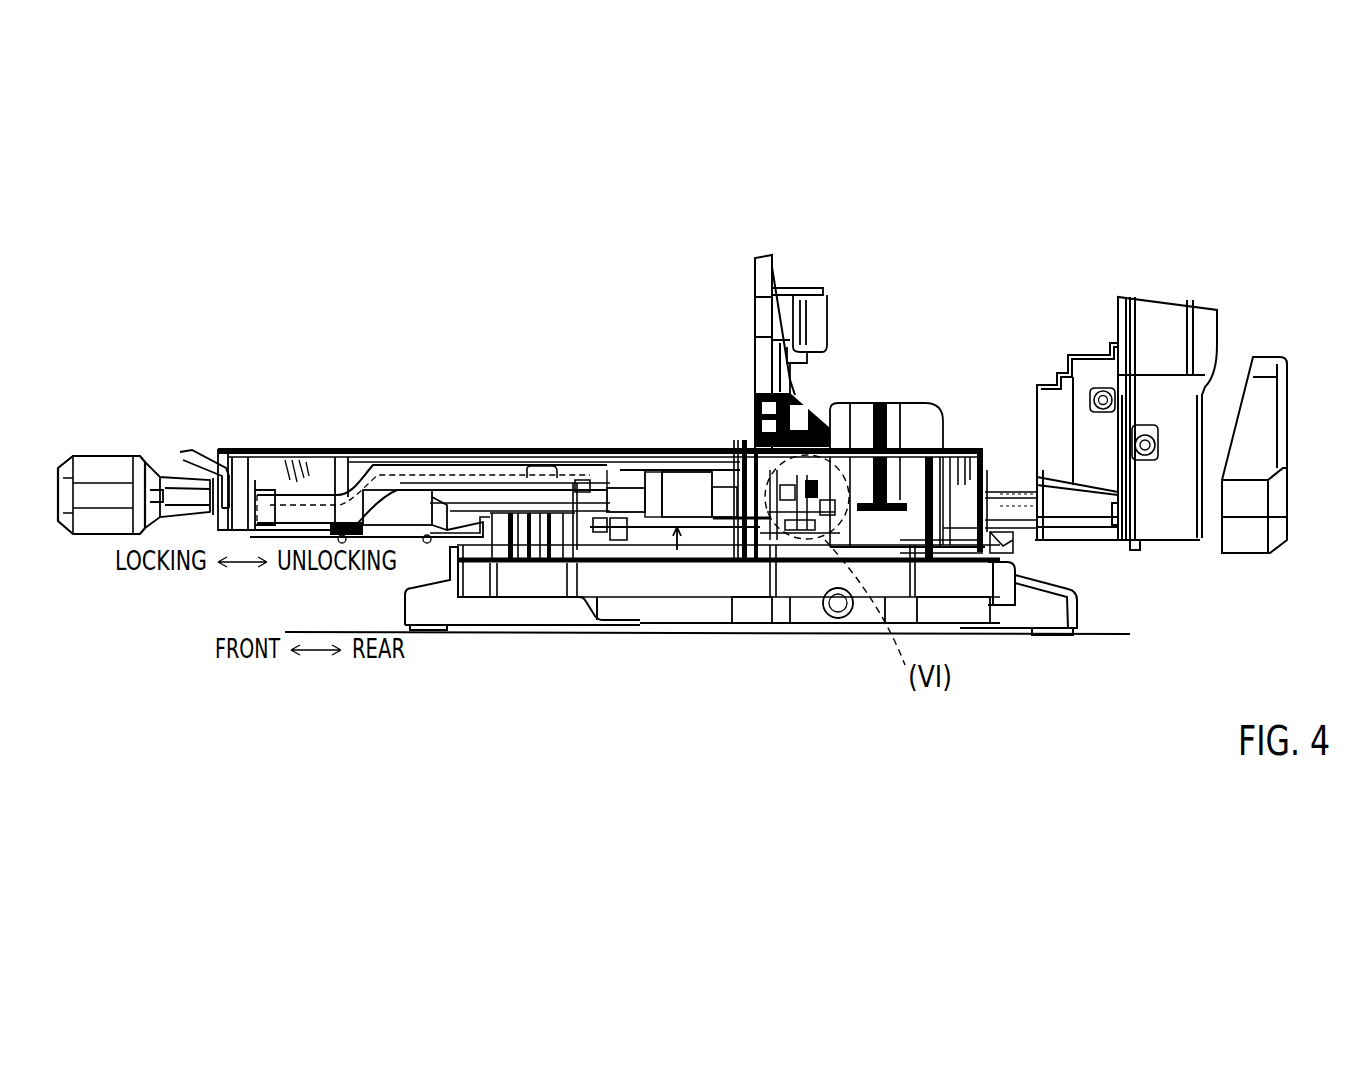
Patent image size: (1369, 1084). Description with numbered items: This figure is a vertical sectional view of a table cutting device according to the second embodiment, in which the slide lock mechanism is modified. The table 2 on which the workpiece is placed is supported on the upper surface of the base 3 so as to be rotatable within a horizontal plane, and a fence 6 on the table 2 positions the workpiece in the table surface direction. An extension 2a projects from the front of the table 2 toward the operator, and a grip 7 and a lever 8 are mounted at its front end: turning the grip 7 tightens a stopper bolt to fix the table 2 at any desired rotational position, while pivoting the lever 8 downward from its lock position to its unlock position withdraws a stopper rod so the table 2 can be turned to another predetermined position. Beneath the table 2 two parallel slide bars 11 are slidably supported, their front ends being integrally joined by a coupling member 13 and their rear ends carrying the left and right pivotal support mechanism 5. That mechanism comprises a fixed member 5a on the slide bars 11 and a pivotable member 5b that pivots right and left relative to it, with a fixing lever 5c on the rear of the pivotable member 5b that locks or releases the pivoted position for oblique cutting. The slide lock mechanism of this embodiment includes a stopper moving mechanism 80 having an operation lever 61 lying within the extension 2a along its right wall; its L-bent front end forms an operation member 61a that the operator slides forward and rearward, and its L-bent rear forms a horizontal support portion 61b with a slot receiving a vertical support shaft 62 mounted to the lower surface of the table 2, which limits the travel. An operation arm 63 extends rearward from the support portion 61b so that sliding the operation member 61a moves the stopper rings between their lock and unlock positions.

The table 2 is at (699, 437).
The extension 2a is at (352, 478).
The base 3 is at (428, 605).
The left and right pivotal support mechanism 5 is at (1097, 323).
The fixed member 5a is at (1085, 428).
The pivotable member 5b is at (1180, 400).
The fixing lever 5c is at (1263, 432).
The fence 6 is at (755, 283).
The grip 7 is at (118, 472).
The lever 8 is at (203, 450).
The slide bars 11 is at (632, 498).
The coupling member 13 is at (618, 540).
The operation lever 61 is at (445, 465).
The operation member 61a is at (270, 490).
The support portion 61b is at (675, 490).
The support shaft 62 is at (583, 492).
The operation arm 63 is at (735, 490).
The stopper moving mechanism 80 is at (678, 550).